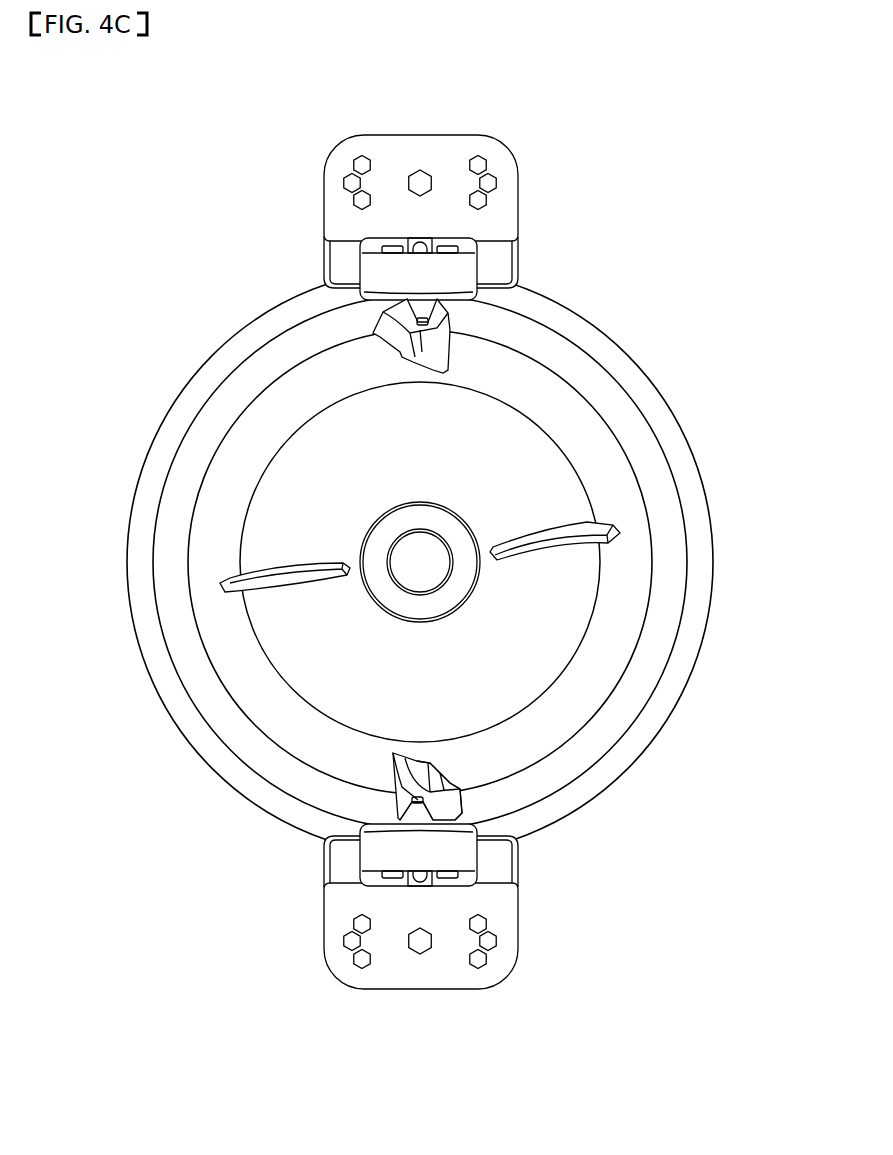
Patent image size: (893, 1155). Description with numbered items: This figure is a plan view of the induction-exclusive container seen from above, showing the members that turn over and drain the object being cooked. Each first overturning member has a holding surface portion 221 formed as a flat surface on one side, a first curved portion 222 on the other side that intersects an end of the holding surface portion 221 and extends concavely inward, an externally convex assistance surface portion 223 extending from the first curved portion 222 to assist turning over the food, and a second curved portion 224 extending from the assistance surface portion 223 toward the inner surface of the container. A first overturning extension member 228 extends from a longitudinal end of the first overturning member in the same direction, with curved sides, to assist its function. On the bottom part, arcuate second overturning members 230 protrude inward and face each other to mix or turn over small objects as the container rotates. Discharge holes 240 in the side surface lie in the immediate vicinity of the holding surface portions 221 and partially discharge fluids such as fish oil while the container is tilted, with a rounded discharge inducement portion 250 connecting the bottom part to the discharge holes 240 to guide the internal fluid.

The holding surface portion 221 is at (395, 810).
The first curved portion 222 is at (410, 768).
The assistance surface portion 223 is at (447, 765).
The second curved portion 224 is at (455, 793).
The first overturning extension member 228 is at (400, 822).
The second overturning member 230 is at (550, 517).
The discharge hole 240 is at (357, 783).
The discharge inducement portion 250 is at (605, 458).